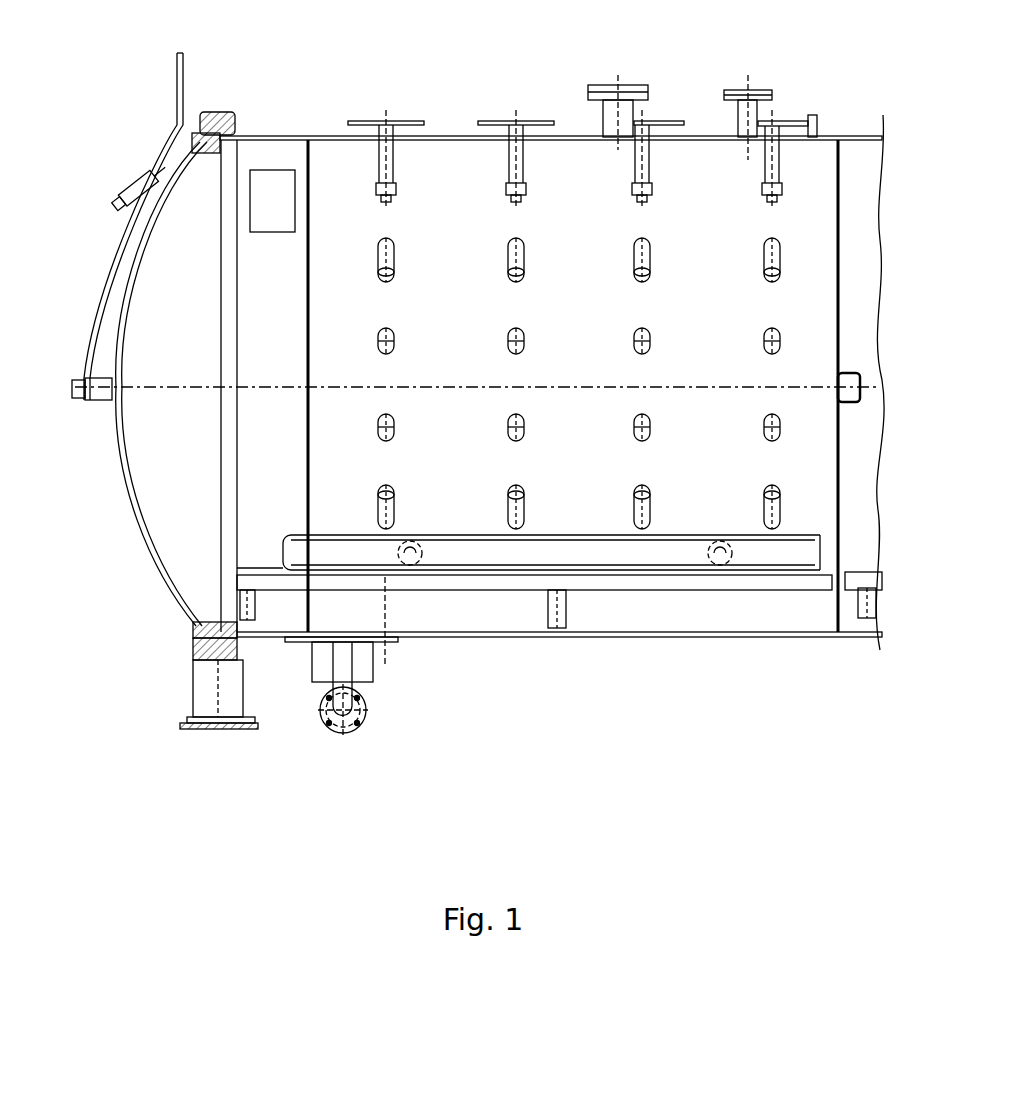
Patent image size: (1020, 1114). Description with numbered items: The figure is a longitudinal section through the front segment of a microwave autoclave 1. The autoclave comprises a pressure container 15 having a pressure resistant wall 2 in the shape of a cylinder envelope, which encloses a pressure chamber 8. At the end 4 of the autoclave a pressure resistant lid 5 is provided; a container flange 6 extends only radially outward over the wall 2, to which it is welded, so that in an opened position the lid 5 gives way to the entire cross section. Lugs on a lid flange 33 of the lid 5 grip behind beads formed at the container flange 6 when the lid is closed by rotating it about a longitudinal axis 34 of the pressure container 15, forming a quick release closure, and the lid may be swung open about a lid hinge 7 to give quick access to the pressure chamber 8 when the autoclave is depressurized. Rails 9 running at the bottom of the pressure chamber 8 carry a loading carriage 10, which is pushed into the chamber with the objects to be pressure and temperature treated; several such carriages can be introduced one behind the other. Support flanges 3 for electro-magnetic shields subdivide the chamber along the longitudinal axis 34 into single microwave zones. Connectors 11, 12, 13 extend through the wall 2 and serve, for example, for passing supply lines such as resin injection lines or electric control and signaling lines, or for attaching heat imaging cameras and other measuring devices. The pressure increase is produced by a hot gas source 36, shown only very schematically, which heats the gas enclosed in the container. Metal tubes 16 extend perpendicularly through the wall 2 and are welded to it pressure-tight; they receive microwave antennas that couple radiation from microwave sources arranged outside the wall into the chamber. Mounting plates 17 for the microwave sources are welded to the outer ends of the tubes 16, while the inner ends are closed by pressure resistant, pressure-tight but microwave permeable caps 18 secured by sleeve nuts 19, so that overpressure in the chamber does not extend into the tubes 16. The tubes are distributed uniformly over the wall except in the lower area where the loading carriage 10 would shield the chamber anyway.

The microwave autoclave 1 is at (524, 70).
The pressure resistant wall 2 is at (262, 135).
The support flanges 3 is at (561, 320).
The end 4 is at (189, 687).
The pressure resistant lid 5 is at (137, 455).
The container flange 6 is at (219, 125).
The lid hinge 7 is at (150, 106).
The pressure chamber 8 is at (692, 223).
The rails 9 is at (665, 583).
The loading carriage 10 is at (480, 572).
The connector 11 is at (620, 72).
The connector 12 is at (752, 93).
The connector 13 is at (360, 728).
The pressure container 15 is at (601, 655).
The tubes 16 is at (579, 388).
The mounting plates 17 is at (368, 122).
The caps 18 is at (583, 111).
The sleeve nuts 19 is at (698, 107).
The lid flange 33 is at (156, 110).
The longitudinal axis 34 is at (95, 430).
The hot gas source 36 is at (157, 242).